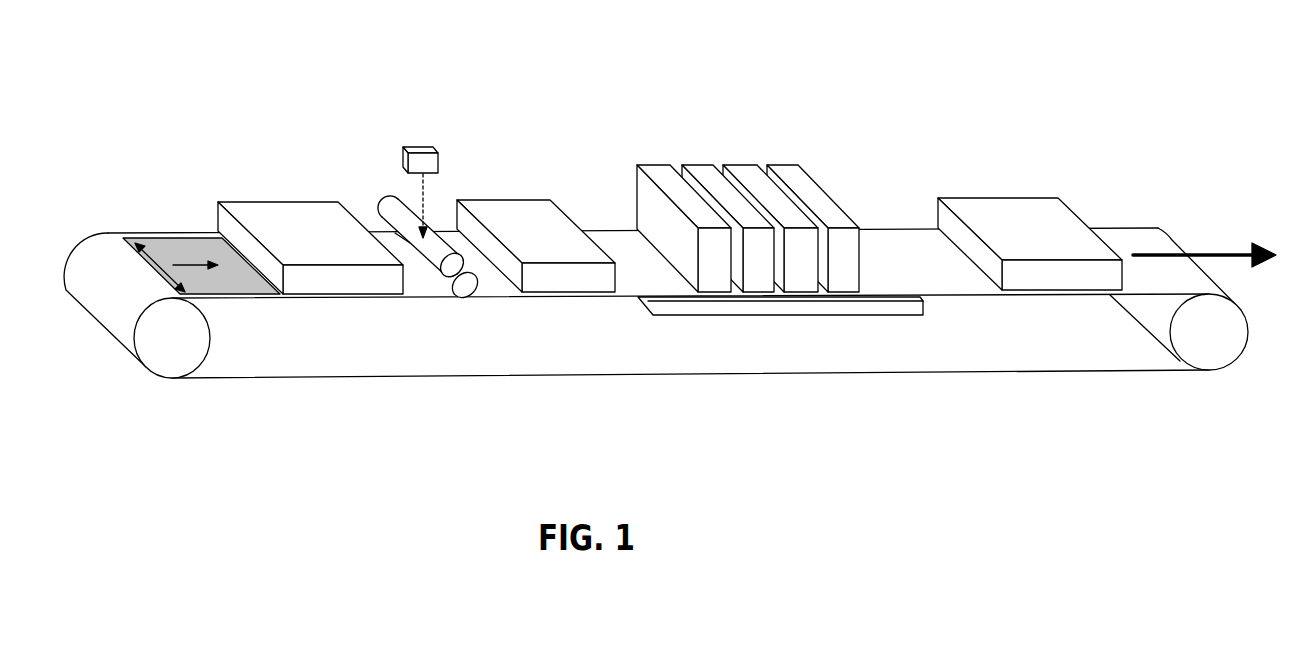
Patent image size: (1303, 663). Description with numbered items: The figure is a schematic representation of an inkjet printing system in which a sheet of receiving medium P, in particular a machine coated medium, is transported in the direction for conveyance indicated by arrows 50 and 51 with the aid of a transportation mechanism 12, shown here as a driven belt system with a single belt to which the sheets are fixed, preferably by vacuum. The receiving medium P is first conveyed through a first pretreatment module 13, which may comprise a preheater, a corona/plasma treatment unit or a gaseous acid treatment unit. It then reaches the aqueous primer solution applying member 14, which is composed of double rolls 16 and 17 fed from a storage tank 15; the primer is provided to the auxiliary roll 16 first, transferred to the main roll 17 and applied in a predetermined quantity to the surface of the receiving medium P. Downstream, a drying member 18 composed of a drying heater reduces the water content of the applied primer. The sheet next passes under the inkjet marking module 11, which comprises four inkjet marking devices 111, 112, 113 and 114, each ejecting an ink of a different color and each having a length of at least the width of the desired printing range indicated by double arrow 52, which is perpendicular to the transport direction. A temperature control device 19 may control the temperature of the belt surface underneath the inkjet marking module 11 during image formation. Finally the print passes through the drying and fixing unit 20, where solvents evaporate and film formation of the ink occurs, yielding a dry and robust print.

The inkjet marking module 11 is at (743, 150).
The inkjet marking device 111 is at (783, 165).
The inkjet marking device 112 is at (740, 165).
The inkjet marking device 113 is at (698, 165).
The inkjet marking device 114 is at (680, 206).
The transportation mechanism 12 is at (190, 353).
The first pretreatment module 13 is at (287, 207).
The aqueous primer solution applying member 14 is at (424, 200).
The storage tank 15 is at (420, 146).
The auxiliary roll 16 is at (382, 208).
The main roll 17 is at (465, 294).
The drying member 18 is at (525, 208).
The temperature control device 19 is at (798, 313).
The drying and fixing unit 20 is at (1005, 207).
The arrow 50 is at (192, 262).
The arrow 51 is at (1172, 238).
The double arrow 52 is at (132, 291).
The receiving medium P is at (139, 242).